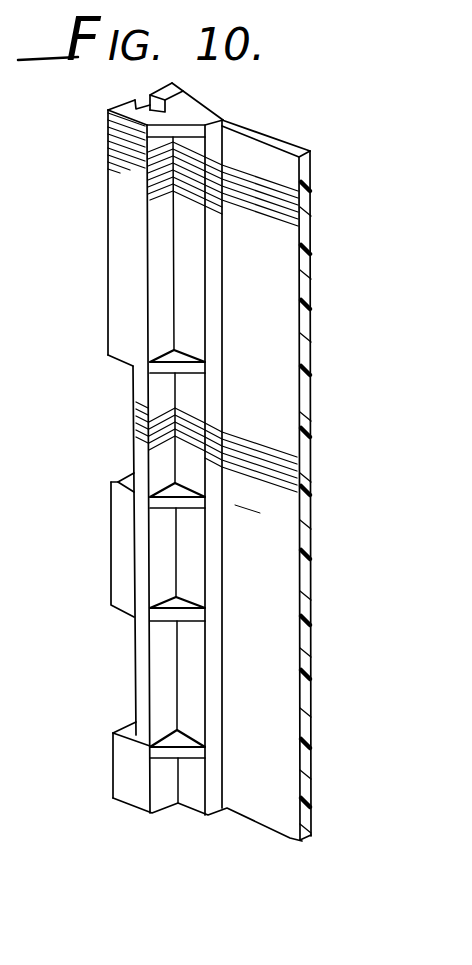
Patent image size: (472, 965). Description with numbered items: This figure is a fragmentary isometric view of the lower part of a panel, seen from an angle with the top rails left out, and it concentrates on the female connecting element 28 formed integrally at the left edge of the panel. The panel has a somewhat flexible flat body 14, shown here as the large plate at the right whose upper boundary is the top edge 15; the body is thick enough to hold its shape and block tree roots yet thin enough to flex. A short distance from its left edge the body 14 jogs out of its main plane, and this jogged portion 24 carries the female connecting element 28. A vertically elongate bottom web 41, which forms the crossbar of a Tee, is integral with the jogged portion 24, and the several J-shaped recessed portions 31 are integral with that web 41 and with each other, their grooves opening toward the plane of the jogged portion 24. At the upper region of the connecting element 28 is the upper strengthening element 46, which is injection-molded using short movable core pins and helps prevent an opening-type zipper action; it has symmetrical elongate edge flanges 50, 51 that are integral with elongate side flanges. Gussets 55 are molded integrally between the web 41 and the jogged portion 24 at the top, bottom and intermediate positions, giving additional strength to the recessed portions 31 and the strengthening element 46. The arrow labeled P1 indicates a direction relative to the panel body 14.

The flat body 14 is at (283, 460).
The top edge 15 is at (299, 127).
The jogged body portion 24 is at (193, 308).
The female connecting element 28 is at (107, 346).
The recessed portion 31 is at (113, 539).
The bottom web 41 is at (163, 244).
The upper strengthening element 46 is at (108, 203).
The edge flange 50 is at (150, 90).
The edge flange 51 is at (133, 100).
The gusset 55 is at (218, 115).
The applied force direction P1 is at (324, 294).